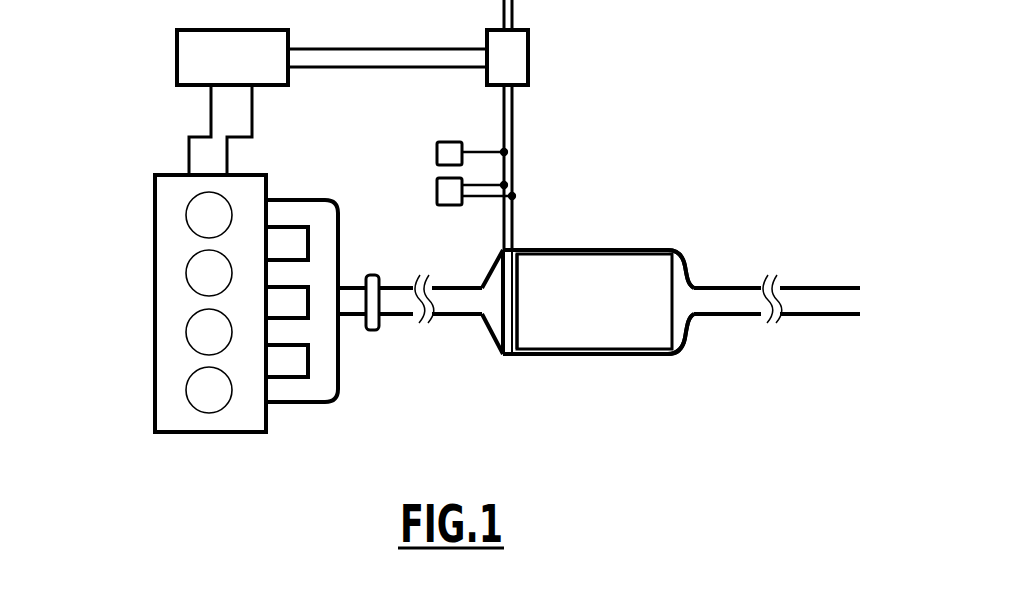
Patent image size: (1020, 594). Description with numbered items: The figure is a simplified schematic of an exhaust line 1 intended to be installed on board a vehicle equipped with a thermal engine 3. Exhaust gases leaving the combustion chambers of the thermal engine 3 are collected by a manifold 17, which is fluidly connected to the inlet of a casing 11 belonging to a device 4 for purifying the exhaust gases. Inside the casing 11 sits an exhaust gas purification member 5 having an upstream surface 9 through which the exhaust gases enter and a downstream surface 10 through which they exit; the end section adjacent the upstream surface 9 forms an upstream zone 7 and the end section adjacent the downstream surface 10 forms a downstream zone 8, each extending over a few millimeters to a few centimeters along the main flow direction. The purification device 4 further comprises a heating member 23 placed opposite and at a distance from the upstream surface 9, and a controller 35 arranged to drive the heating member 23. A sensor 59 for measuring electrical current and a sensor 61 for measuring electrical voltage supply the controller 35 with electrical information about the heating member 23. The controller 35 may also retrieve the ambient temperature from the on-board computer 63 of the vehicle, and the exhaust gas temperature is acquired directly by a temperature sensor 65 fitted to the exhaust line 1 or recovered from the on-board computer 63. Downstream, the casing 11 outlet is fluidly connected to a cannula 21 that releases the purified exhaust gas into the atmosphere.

The exhaust line 1 is at (599, 207).
The thermal engine 3 is at (168, 266).
The device for purifying the exhaust gases 4 is at (598, 207).
The exhaust gas purification member 5 is at (573, 278).
The upstream zone 7 is at (532, 272).
The downstream zone 8 is at (668, 258).
The upstream surface 9 is at (515, 247).
The downstream surface 10 is at (681, 268).
The casing 11 is at (529, 357).
The manifold 17 is at (322, 350).
The cannula 21 is at (820, 287).
The heating member 23 is at (492, 330).
The controller 35 is at (513, 53).
The sensor for measuring electrical current 59 is at (450, 148).
The sensor for measuring the electrical voltage 61 is at (437, 192).
The on-board computer 63 is at (190, 55).
The temperature sensor 65 is at (372, 331).